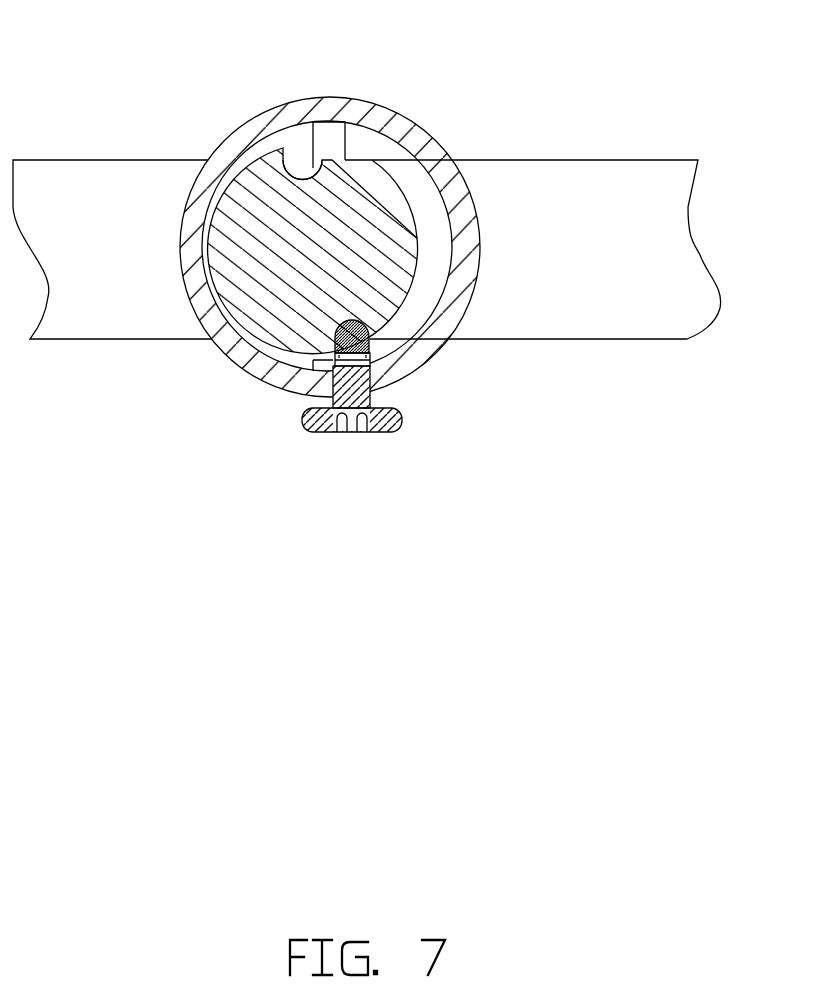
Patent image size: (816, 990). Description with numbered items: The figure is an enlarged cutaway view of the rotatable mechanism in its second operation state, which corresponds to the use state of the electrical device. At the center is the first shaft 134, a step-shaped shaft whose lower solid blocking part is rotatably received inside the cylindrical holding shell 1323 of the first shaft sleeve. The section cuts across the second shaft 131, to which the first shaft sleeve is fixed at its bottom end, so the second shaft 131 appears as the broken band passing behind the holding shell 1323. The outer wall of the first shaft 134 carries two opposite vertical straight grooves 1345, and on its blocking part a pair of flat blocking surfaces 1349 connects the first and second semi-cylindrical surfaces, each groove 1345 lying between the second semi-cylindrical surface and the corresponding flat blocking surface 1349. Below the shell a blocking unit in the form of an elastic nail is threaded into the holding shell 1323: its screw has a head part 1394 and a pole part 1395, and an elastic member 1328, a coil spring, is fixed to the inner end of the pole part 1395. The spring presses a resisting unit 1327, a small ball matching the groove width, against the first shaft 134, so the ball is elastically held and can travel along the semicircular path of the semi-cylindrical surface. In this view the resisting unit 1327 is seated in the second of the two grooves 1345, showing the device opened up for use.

The second shaft 131 is at (617, 187).
The first shaft 134 is at (270, 234).
The cylindrical holding shell 1323 is at (413, 140).
The grooves 1345 is at (315, 158).
The flat blocking surfaces 1349 is at (298, 147).
The resisting unit 1327 is at (368, 343).
The elastic member 1328 is at (367, 360).
The pole part 1395 is at (370, 380).
The head part 1394 is at (387, 432).